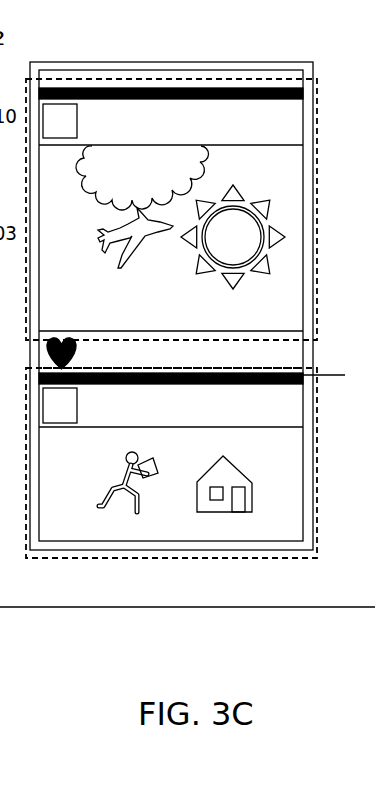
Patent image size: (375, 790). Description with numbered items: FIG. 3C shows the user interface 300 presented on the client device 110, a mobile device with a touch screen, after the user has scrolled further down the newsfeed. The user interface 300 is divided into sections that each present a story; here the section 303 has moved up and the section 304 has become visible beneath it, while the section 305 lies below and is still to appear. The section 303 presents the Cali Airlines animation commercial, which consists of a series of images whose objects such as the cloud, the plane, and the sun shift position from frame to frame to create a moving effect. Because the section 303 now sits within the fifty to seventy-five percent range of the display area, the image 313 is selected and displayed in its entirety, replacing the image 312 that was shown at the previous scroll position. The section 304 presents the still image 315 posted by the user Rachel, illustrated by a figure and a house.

The client device 110 is at (65, 62).
The user interface 300 is at (173, 73).
The section 303 is at (285, 83).
The section 304 is at (290, 368).
The section 305 is at (374, 535).
The image 312 is at (8, 348).
The image 313 is at (294, 190).
The still image 315 is at (279, 465).